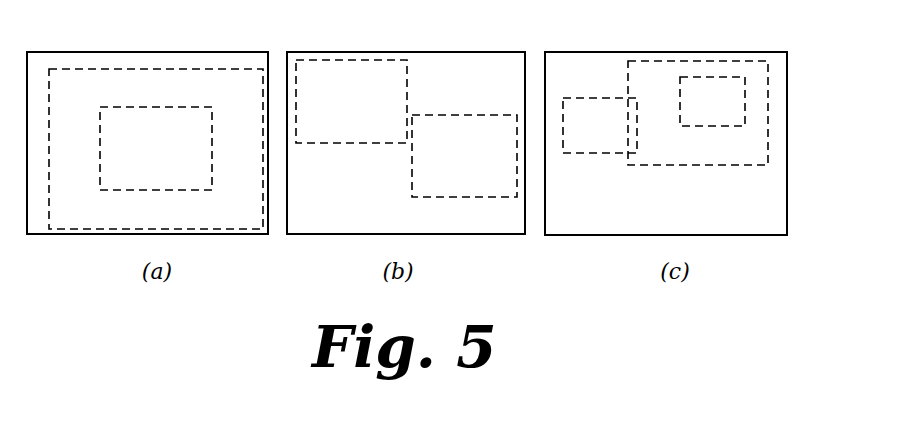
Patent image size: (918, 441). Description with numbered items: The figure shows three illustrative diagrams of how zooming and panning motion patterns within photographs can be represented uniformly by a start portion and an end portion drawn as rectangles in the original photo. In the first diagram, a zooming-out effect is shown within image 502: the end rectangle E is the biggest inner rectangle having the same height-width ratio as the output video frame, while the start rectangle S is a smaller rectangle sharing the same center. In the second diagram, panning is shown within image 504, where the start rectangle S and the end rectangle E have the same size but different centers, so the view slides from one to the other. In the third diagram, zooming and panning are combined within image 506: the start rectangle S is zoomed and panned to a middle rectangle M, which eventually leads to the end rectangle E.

The image 502 is at (230, 52).
The image 504 is at (480, 52).
The image 506 is at (748, 52).